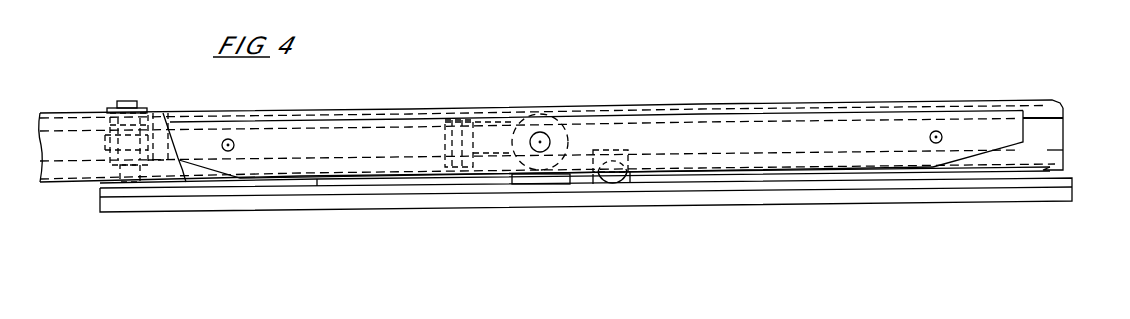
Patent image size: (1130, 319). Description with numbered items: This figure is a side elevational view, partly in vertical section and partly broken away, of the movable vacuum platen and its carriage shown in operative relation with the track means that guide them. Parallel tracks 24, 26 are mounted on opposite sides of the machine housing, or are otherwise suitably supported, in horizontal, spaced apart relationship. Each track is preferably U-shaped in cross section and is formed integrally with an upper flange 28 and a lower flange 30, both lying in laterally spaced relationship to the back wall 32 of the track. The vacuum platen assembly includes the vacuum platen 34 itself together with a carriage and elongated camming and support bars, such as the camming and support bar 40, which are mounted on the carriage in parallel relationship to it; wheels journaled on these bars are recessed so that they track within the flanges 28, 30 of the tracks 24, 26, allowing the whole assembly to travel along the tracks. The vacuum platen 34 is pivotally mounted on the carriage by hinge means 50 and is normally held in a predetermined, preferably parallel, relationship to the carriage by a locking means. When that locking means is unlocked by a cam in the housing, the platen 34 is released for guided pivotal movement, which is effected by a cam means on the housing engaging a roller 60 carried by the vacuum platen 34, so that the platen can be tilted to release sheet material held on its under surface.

The track 24 is at (568, 117).
The track 26 is at (52, 188).
The upper flange 28 is at (1036, 110).
The lower flange 30 is at (1058, 166).
The back wall 32 is at (1050, 138).
The vacuum platen 34 is at (733, 198).
The camming and support bar 40 is at (596, 181).
The hinge means 50 is at (541, 190).
The roller 60 is at (615, 185).